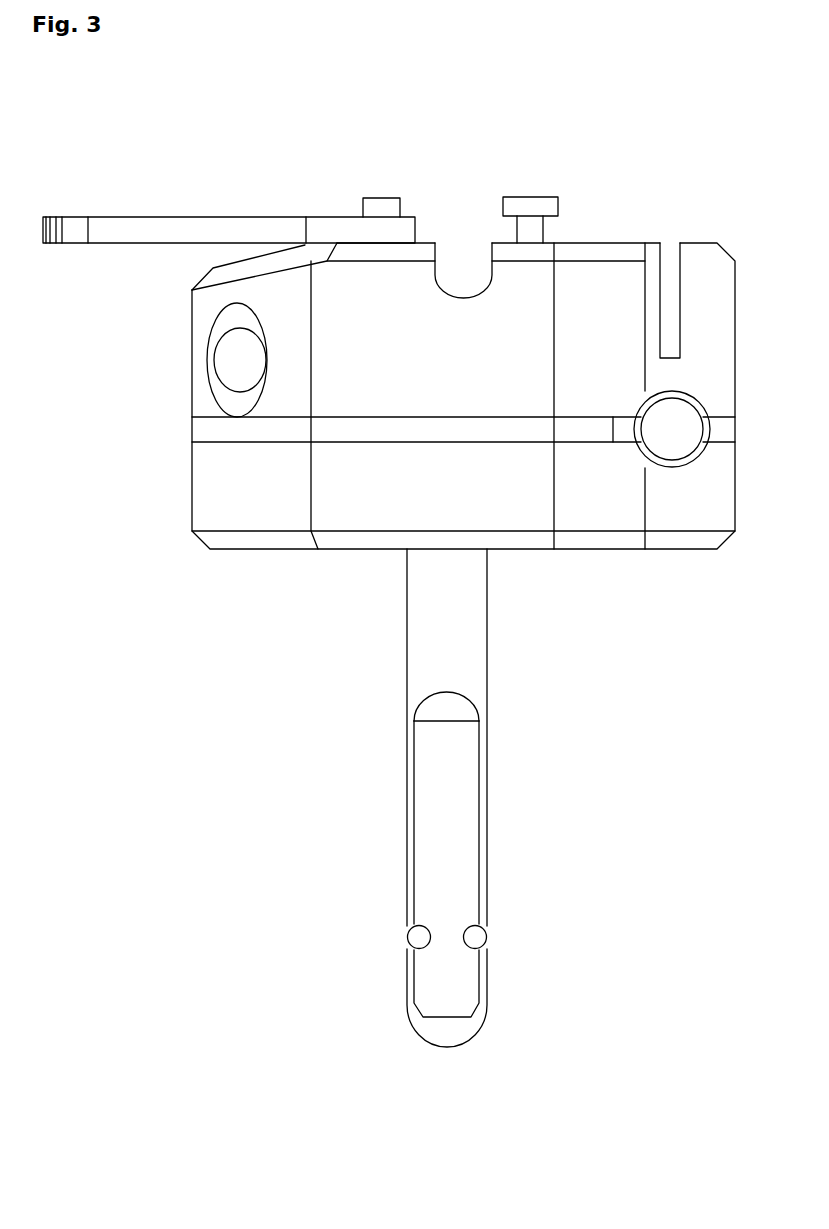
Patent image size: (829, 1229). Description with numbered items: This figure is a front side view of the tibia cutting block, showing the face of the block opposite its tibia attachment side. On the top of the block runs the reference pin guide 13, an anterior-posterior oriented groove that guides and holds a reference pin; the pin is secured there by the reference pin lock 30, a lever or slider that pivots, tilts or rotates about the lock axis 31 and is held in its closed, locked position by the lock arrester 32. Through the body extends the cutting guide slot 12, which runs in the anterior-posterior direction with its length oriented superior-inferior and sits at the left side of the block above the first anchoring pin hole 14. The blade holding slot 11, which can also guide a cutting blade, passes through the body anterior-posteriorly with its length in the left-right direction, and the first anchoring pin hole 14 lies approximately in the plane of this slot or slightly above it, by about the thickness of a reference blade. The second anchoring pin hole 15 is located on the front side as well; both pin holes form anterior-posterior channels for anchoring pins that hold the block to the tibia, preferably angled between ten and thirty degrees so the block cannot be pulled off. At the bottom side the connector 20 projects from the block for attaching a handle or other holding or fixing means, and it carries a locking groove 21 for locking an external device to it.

The blade holding slot 11 is at (200, 432).
The cutting guide slot 12 is at (672, 255).
The reference pin guide 13 is at (465, 278).
The first anchoring pin hole 14 is at (673, 430).
The second anchoring pin hole 15 is at (242, 362).
The connector 20 is at (498, 878).
The locking groove 21 is at (485, 950).
The reference pin lock 30 is at (200, 232).
The lock axis 31 is at (387, 210).
The lock arrester 32 is at (535, 208).